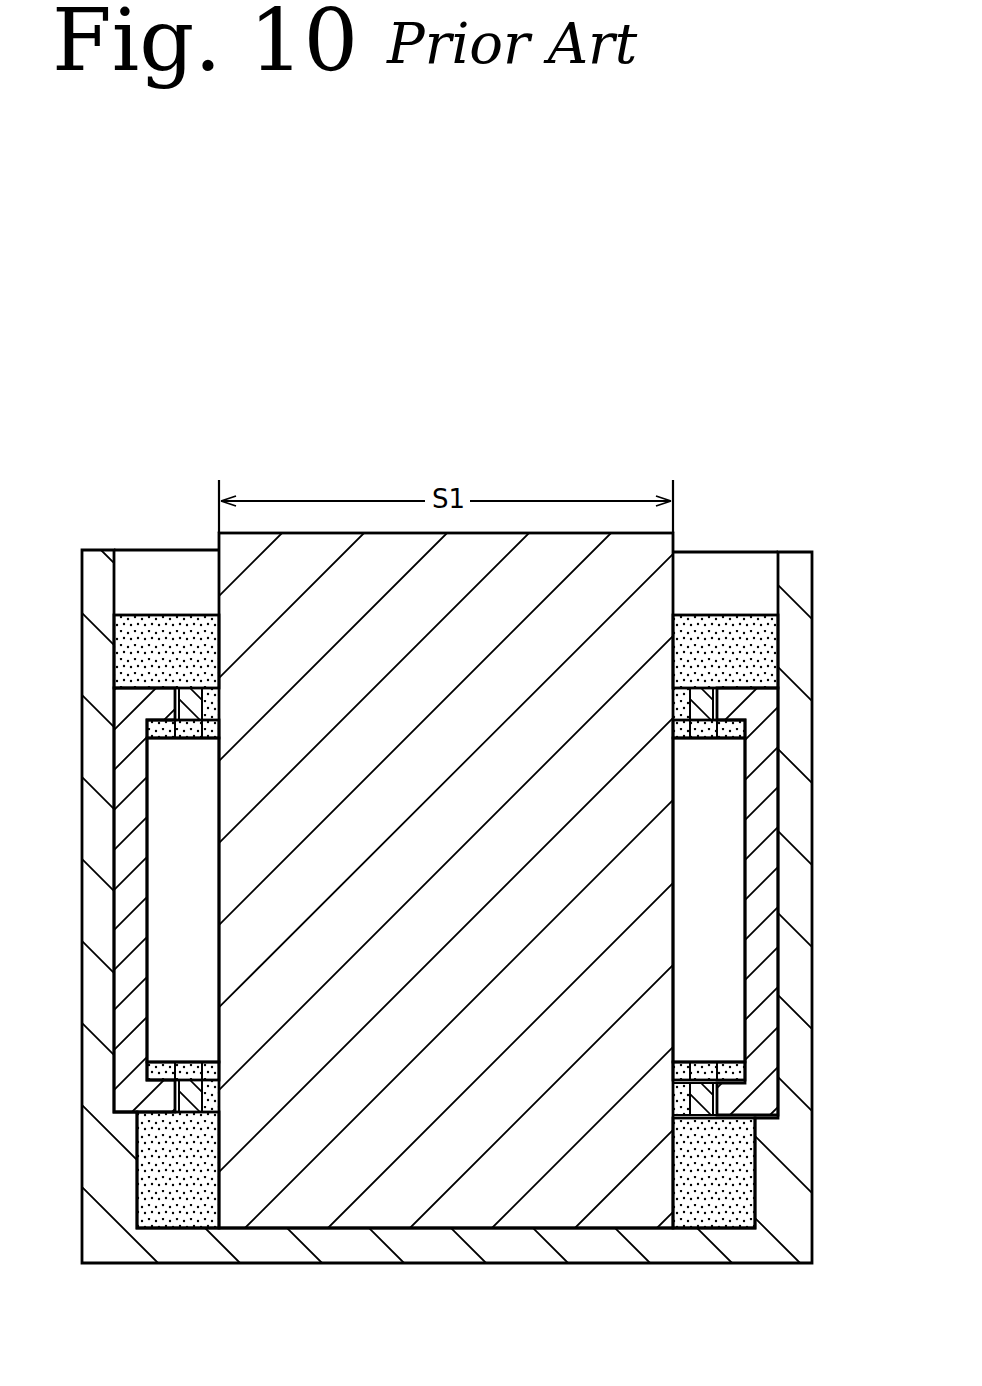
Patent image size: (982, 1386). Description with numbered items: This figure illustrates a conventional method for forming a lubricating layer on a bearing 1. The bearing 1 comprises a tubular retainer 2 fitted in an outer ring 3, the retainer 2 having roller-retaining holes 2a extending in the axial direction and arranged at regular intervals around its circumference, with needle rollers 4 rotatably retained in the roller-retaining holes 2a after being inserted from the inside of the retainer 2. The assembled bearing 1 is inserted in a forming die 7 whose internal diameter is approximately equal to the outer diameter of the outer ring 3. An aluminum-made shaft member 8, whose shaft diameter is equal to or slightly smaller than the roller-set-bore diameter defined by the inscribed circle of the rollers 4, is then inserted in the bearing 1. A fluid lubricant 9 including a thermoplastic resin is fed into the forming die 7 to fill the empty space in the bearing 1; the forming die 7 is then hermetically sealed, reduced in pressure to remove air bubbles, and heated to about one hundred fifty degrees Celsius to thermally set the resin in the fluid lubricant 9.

The bearing 1 is at (744, 668).
The tubular retainer 2 is at (195, 685).
The roller-retaining holes 2a is at (145, 720).
The outer ring 3 is at (125, 835).
The needle rollers 4 is at (165, 1025).
The forming die 7 is at (792, 567).
The shaft member 8 is at (494, 1202).
The fluid lubricant 9 is at (138, 625).